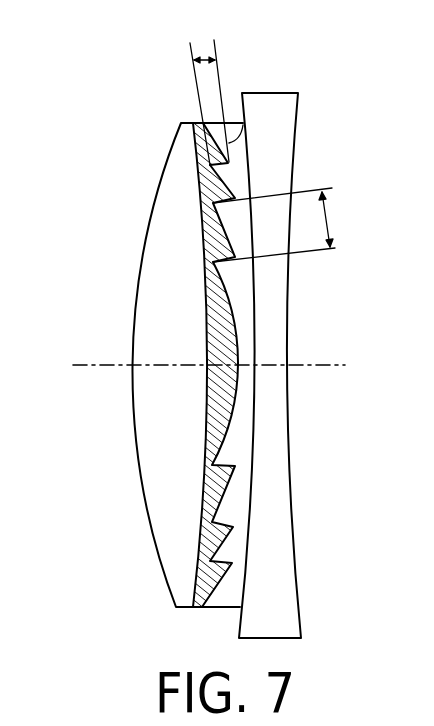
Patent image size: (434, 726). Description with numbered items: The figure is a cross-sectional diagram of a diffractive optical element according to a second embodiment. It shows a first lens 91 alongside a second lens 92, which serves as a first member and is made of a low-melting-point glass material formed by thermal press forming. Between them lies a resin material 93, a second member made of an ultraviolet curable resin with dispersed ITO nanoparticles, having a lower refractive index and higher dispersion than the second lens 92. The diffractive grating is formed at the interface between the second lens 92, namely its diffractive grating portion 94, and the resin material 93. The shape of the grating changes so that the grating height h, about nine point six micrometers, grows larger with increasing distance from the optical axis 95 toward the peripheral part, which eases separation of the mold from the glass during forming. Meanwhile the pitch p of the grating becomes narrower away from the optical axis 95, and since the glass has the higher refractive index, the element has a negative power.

The first lens 91 is at (160, 266).
The second lens 92 is at (273, 129).
The resin material 93 is at (177, 125).
The diffractive grating portion 94 is at (230, 162).
The optical axis 95 is at (95, 362).
The grating height h is at (209, 88).
The pitch p is at (287, 225).